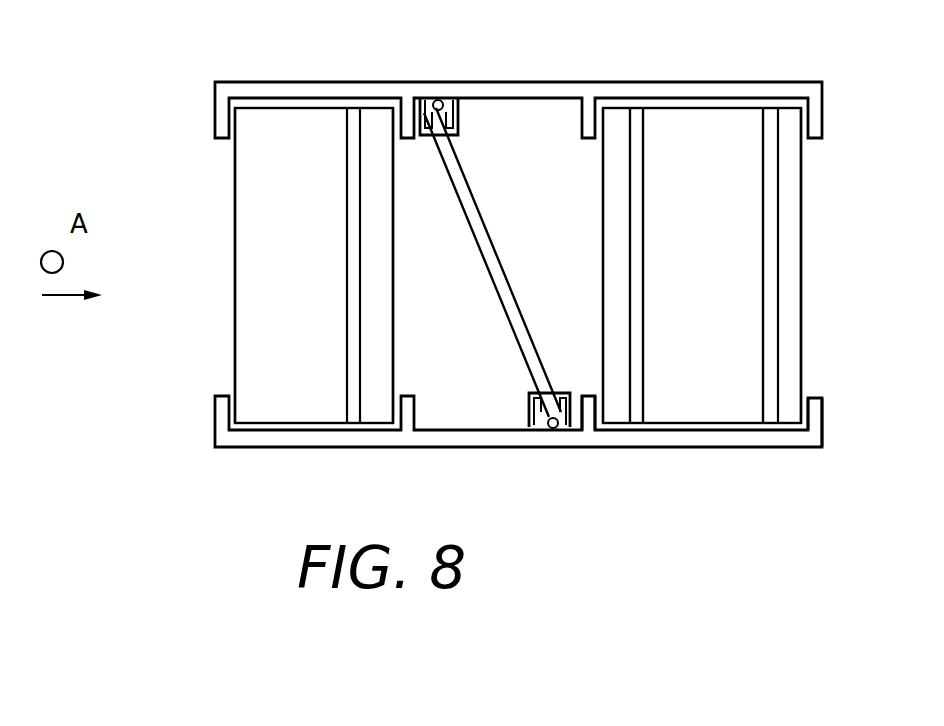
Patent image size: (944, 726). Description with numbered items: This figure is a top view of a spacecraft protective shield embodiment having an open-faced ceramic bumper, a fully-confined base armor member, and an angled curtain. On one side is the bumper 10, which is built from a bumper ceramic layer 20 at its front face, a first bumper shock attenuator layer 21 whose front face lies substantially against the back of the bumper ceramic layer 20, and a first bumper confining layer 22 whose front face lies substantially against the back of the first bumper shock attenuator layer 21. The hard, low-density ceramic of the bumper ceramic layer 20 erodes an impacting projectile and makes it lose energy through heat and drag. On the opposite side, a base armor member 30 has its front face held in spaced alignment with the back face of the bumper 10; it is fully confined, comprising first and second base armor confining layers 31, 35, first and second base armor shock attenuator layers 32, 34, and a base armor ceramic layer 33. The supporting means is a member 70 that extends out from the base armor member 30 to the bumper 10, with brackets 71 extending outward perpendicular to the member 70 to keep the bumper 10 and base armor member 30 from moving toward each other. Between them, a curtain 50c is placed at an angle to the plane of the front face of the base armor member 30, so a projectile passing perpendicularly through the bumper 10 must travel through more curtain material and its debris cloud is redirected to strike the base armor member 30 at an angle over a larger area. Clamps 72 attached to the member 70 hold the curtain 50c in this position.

The bumper 10 is at (293, 405).
The bumper ceramic layer 20 is at (253, 127).
The first bumper shock attenuator layer 21 is at (350, 127).
The first bumper confining layer 22 is at (373, 123).
The base armor member 30 is at (742, 323).
The first base armor confining layer 31 is at (785, 145).
The first base armor shock attenuator layer 32 is at (768, 123).
The base armor ceramic layer 33 is at (690, 130).
The second base armor shock attenuator layer 34 is at (630, 130).
The second base armor confining layer 35 is at (605, 130).
The curtain 50c is at (505, 263).
The member 70 is at (385, 437).
The brackets 71 is at (585, 425).
The clamps 72 is at (530, 405).